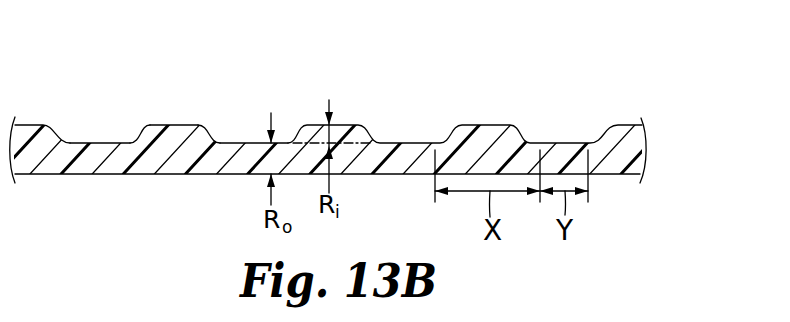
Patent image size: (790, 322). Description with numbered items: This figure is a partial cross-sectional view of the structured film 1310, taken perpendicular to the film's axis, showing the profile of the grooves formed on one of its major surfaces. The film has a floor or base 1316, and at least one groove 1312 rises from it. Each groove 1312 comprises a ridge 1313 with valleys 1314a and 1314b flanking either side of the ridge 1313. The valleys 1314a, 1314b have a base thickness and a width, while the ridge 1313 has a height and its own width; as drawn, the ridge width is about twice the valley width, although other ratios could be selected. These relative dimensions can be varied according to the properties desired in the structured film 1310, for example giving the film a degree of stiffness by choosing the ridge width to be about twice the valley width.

The structured film 1310 is at (338, 139).
The groove 1312 is at (167, 127).
The ridge 1313 is at (188, 127).
The valley 1314a is at (106, 143).
The valley 1314b is at (243, 143).
The floor or base 1316 is at (141, 162).